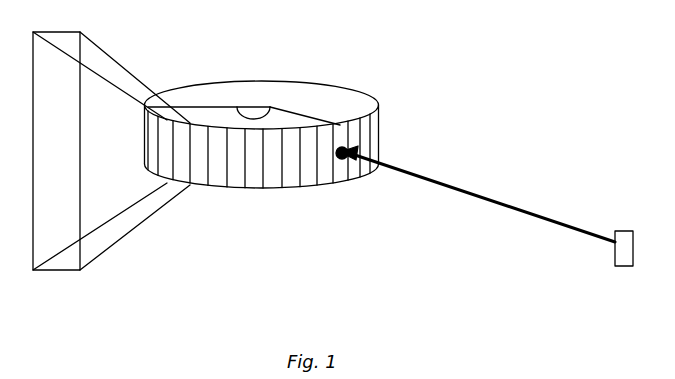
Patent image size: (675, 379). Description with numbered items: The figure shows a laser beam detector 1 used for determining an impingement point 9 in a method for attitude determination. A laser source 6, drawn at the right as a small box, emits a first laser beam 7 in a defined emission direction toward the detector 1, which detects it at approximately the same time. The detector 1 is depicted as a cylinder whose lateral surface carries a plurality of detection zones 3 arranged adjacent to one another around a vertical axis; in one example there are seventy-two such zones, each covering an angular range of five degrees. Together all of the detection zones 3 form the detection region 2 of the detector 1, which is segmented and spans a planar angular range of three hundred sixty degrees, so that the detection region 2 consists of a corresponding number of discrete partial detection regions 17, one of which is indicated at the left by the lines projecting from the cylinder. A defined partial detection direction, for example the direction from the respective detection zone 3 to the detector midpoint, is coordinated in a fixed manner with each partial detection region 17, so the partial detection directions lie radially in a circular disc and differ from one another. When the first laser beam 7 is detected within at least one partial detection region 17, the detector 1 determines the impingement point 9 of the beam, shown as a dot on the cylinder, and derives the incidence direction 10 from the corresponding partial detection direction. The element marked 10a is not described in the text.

The laser beam detector 1 is at (364, 39).
The detection region 2 is at (398, 112).
The detection zones 3 is at (343, 132).
The laser source 6 is at (581, 255).
The first laser beam 7 is at (477, 194).
The impingement point 9 is at (382, 186).
The incidence direction 10 is at (270, 202).
The hub 10a is at (221, 172).
The partial detection regions 17 is at (113, 144).